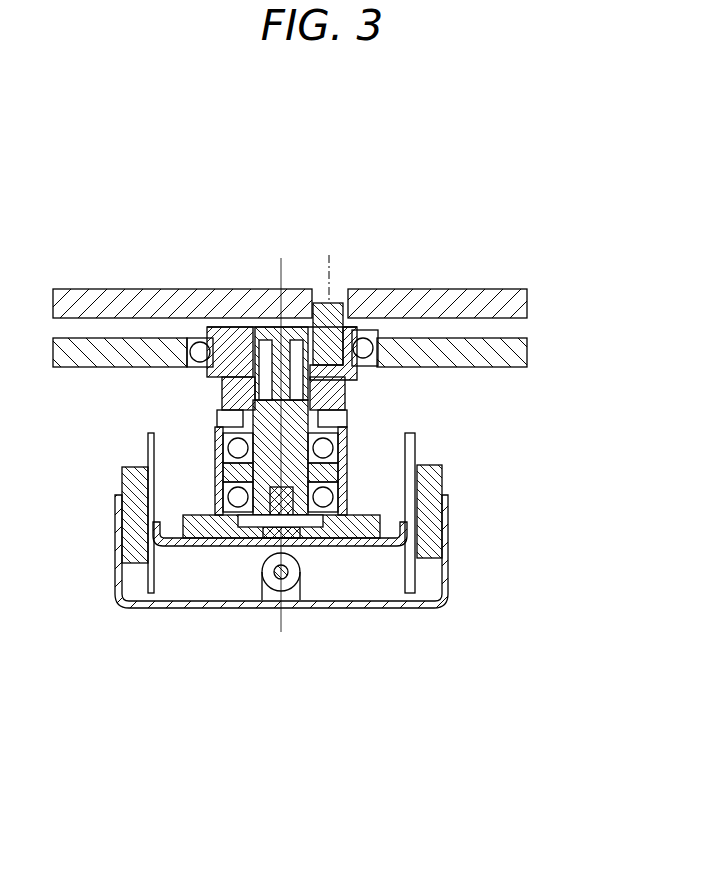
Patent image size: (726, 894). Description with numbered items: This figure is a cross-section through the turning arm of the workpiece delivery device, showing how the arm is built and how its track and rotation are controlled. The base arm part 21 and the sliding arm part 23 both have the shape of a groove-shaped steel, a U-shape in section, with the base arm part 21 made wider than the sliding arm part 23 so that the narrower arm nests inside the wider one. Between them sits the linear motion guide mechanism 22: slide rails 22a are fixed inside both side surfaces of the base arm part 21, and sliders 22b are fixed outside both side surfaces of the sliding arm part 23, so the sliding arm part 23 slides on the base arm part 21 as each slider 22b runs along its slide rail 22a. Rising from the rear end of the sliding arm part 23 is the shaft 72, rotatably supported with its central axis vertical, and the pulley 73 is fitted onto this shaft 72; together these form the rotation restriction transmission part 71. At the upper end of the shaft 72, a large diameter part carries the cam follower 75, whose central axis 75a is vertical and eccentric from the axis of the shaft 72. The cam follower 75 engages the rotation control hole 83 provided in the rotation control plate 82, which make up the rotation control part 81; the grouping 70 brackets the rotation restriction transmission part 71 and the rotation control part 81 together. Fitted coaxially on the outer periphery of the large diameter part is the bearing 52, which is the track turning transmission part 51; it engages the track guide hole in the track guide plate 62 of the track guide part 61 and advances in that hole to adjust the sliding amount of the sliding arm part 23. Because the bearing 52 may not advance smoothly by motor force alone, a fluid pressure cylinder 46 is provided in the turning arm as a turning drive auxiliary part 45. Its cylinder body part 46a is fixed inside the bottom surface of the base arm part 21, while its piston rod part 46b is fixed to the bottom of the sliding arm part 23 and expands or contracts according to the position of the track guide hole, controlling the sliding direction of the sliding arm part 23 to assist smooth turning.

The drive unit 70 is at (311, 178).
The rotation restriction transmission part 71 is at (238, 275).
The rotation control part 81 is at (373, 204).
The cam follower 75 is at (346, 290).
The central axis 75a is at (327, 275).
The rotation control hole 83 is at (316, 300).
The bearing 52 is at (365, 340).
The rotation control plate 82 is at (486, 290).
The track guide part 61 is at (537, 358).
The track guide plate 62 is at (485, 368).
The track turning transmission part 51 is at (388, 379).
The pulley 73 is at (220, 396).
The shaft 72 is at (262, 435).
The linear motion guide mechanism 22 is at (299, 513).
The slide rail 22a is at (130, 513).
The slider 22b is at (148, 447).
The sliding arm part 23 is at (399, 530).
The base arm part 21 is at (448, 600).
The turning drive auxiliary part 45 is at (274, 665).
The fluid pressure cylinder 46 is at (281, 572).
The cylinder body part 46a is at (258, 590).
The piston rod part 46b is at (323, 648).